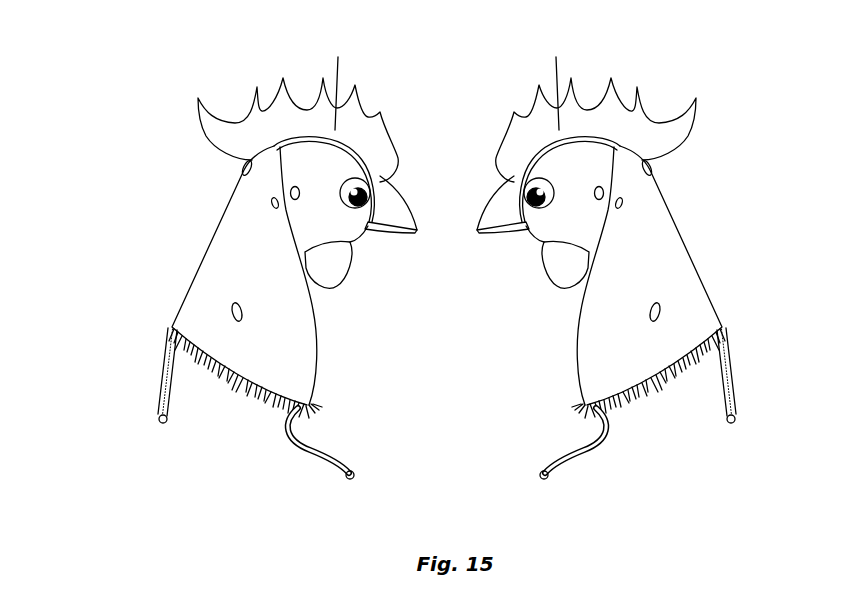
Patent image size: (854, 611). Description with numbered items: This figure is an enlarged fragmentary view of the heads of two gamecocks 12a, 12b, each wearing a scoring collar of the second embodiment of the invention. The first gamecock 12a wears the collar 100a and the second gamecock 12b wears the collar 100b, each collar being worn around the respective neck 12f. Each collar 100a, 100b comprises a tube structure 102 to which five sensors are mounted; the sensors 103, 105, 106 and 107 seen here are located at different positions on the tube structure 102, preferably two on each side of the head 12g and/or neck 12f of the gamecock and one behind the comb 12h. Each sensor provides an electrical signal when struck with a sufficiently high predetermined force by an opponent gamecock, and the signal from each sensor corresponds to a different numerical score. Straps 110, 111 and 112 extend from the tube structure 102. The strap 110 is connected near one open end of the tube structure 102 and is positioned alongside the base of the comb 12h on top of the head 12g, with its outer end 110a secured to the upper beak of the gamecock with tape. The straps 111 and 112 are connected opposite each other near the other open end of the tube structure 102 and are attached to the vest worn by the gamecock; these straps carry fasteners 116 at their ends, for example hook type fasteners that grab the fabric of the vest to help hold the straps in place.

The collar 100a is at (310, 348).
The collar 100b is at (577, 348).
The tube structure 102 is at (210, 262).
The sensor 103 is at (238, 167).
The sensor 105 is at (227, 306).
The sensor 106 is at (270, 202).
The sensor 107 is at (665, 306).
The strap 110 is at (452, 81).
The outer end of strap 110a is at (514, 176).
The strap 111 is at (157, 408).
The strap 112 is at (337, 453).
The fastener 116 is at (168, 413).
The gamecock 12a is at (318, 408).
The gamecock 12b is at (573, 410).
The neck 12f is at (273, 407).
The head 12g is at (347, 136).
The comb 12h is at (210, 122).